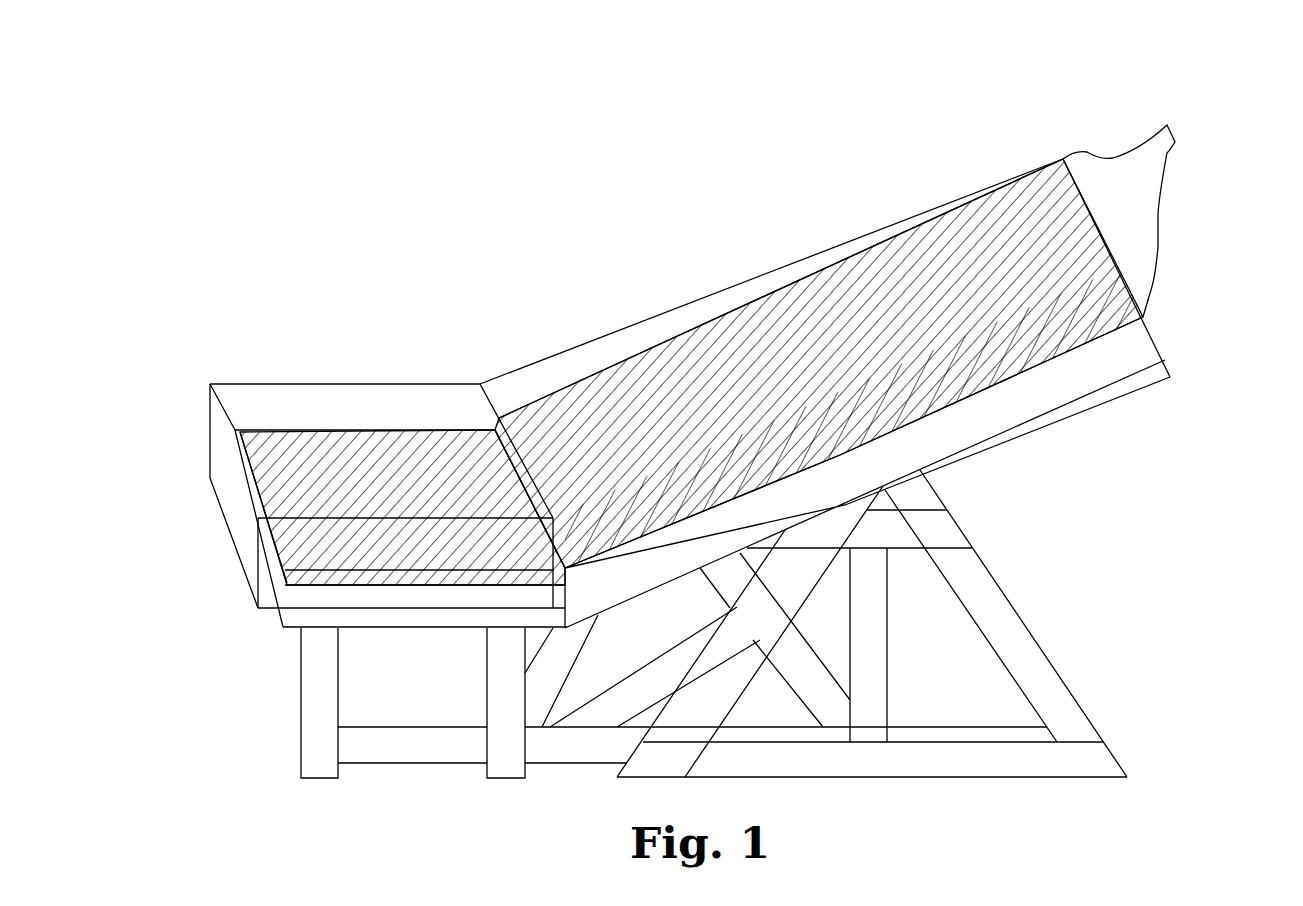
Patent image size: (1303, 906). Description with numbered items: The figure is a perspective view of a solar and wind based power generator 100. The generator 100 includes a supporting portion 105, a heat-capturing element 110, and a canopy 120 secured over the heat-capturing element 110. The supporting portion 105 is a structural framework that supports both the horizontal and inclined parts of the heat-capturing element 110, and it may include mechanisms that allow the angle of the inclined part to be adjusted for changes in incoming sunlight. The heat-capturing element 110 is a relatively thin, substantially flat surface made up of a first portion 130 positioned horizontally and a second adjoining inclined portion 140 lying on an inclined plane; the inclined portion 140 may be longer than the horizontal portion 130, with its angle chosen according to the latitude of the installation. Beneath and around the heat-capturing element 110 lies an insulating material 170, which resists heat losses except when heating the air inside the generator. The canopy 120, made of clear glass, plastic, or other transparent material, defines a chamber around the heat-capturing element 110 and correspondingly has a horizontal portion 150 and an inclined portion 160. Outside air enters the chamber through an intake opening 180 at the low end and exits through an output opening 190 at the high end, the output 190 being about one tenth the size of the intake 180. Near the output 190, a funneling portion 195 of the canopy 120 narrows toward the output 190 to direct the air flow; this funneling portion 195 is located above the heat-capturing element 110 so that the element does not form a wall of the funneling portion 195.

The solar and wind based power generator 100 is at (256, 104).
The supporting portion 105 is at (1071, 661).
The heat-capturing element 110 is at (542, 398).
The canopy 120 is at (616, 323).
The first portion of the heat-capturing element 130 is at (327, 419).
The inclined portion of the heat-capturing element 140 is at (759, 296).
The horizontal portion of the canopy 150 is at (253, 379).
The inclined portion of the canopy 160 is at (841, 229).
The insulating material 170 is at (1036, 376).
The intake opening 180 is at (236, 526).
The output opening 190 is at (1183, 121).
The funneling portion 195 is at (1183, 213).